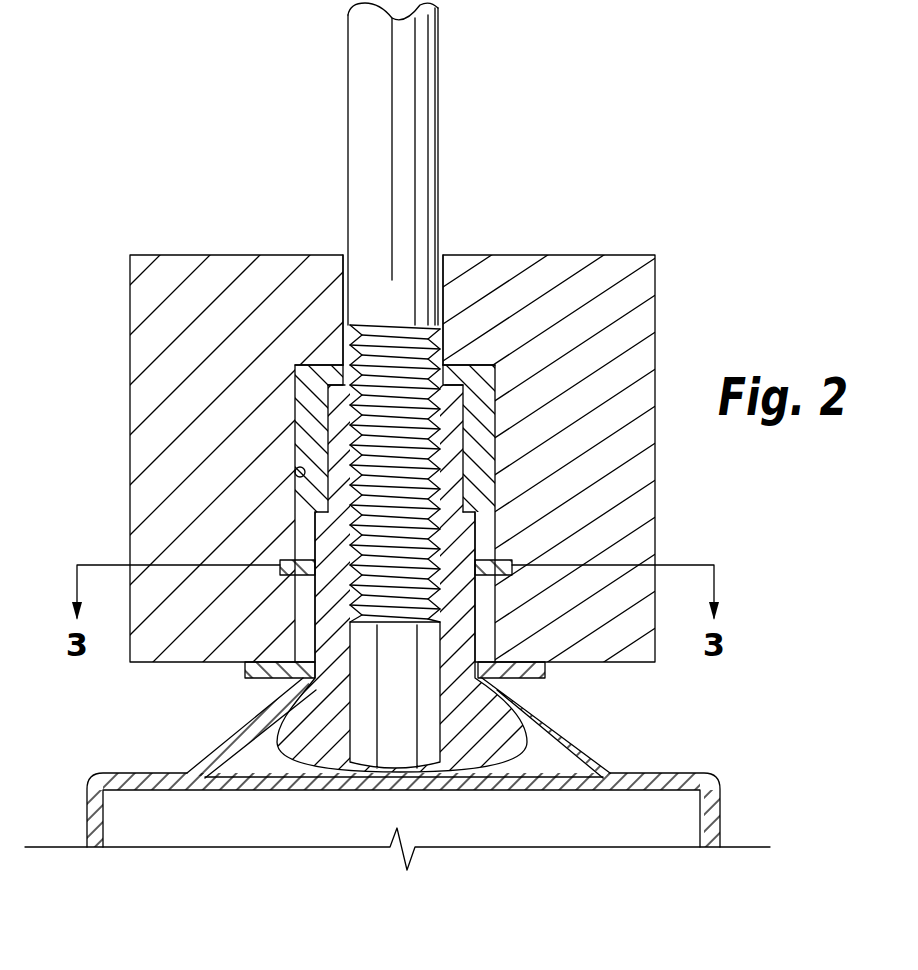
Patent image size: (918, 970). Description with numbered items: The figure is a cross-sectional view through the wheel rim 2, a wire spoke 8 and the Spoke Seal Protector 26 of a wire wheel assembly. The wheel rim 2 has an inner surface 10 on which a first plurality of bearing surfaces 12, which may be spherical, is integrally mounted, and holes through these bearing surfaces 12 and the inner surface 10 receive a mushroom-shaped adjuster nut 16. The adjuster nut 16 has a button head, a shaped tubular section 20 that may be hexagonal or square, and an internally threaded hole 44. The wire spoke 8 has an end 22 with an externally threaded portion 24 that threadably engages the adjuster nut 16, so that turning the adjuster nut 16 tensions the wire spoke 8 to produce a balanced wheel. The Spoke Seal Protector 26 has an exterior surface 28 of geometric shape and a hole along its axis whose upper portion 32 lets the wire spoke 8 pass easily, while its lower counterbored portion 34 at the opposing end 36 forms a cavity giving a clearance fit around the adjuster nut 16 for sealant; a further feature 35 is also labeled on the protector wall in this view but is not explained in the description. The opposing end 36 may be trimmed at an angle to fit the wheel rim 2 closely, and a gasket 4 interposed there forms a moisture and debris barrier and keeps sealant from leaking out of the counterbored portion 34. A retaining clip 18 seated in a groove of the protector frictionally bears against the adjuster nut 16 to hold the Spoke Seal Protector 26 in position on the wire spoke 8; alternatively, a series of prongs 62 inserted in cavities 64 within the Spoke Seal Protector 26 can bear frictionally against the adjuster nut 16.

The wheel rim 2 is at (690, 772).
The gasket 4 is at (548, 668).
The wire spoke 8 is at (440, 113).
The inner surface 10 is at (550, 767).
The bearing surface 12 is at (578, 732).
The adjuster nut 16 is at (317, 767).
The retaining clip 18 is at (512, 566).
The shaped tubular section 20 is at (476, 540).
The end 22 is at (490, 370).
The externally threaded portion 24 is at (445, 340).
The spoke seal protector 26 is at (130, 320).
The exterior surface 28 is at (130, 412).
The upper portion 32 is at (348, 268).
The lower counterbored portion 34 is at (300, 478).
The sleeve right 35 is at (487, 430).
The opposing end 36 is at (300, 683).
The internally threaded hole 44 is at (472, 512).
The prong 62 is at (512, 572).
The cavity 64 is at (542, 665).